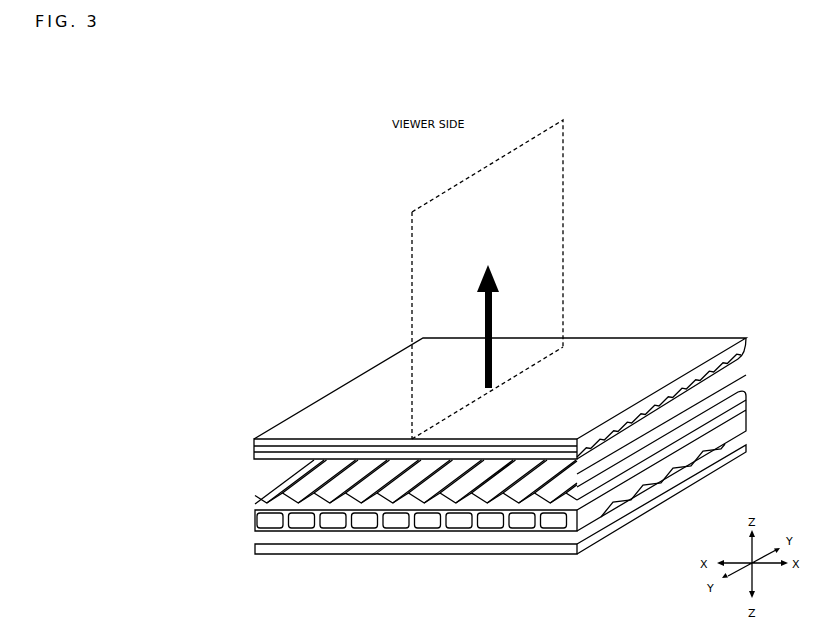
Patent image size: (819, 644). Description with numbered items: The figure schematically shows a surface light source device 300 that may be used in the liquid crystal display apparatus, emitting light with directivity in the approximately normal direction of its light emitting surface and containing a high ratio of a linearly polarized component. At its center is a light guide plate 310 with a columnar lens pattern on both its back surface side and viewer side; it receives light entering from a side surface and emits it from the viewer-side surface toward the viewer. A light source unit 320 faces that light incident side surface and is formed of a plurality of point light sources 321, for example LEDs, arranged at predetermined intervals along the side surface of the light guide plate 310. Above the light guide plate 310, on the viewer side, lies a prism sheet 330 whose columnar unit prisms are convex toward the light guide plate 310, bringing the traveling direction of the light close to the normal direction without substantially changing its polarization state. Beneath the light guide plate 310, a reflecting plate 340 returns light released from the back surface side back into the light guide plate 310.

The surface light source device 300 is at (262, 306).
The light guide plate 310 is at (253, 511).
The light source unit 320 is at (254, 528).
The point light sources 321 is at (333, 521).
The prism sheet 330 is at (253, 451).
The reflecting plate 340 is at (255, 550).